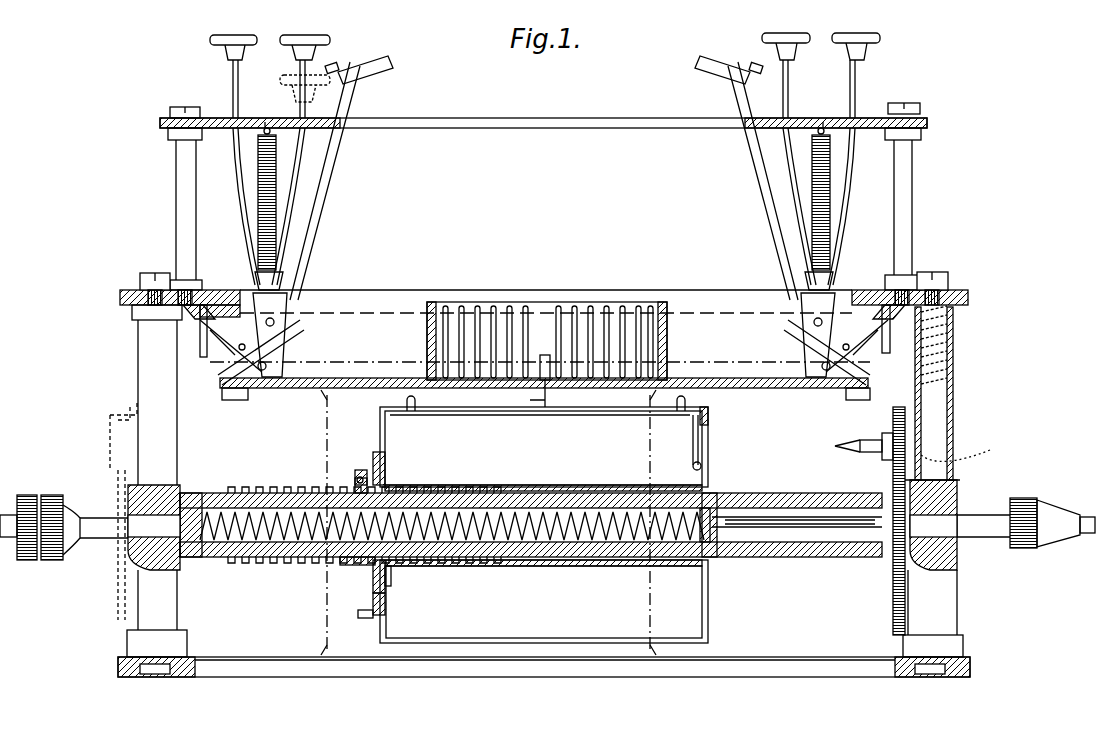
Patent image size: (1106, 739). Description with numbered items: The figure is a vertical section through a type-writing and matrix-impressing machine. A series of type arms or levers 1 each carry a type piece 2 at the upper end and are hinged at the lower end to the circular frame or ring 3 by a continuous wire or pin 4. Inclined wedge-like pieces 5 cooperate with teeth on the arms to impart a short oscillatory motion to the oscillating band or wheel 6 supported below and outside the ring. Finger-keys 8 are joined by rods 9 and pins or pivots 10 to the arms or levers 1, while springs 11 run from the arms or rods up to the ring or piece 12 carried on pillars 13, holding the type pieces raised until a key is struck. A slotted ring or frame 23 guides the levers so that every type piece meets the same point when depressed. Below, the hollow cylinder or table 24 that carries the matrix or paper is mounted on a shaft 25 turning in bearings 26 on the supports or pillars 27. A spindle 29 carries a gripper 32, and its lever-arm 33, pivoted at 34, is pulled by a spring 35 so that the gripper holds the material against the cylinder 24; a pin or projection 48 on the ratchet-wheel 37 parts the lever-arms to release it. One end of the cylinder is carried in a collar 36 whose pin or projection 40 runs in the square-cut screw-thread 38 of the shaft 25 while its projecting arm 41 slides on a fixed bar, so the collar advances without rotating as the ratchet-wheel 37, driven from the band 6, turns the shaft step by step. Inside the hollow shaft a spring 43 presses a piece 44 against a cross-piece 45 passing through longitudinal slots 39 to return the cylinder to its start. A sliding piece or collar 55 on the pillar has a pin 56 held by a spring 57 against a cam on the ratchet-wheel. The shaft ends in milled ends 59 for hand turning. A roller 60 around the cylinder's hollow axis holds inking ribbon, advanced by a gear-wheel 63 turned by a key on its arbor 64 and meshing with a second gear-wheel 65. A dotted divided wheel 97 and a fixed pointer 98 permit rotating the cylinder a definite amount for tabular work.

The type arms or levers 1 is at (326, 190).
The type piece 2 is at (393, 70).
The circular frame or ring 3 is at (120, 294).
The continuous wire or pin 4 is at (262, 338).
The inclined wedge-like pieces 5 is at (200, 350).
The oscillating band or wheel 6 is at (192, 322).
The finger-keys 8 is at (250, 35).
The rods 9 is at (233, 90).
The pins or pivots 10 is at (280, 322).
The springs 11 is at (258, 228).
The ring or piece 12 is at (380, 114).
The pillars 13 is at (178, 193).
The slotted ring or frame 23 is at (568, 305).
The hollow cylinder or table 24 is at (544, 449).
The shaft 25 is at (232, 482).
The bearings 26 is at (130, 490).
The supports or pillars 27 is at (544, 491).
The shaft or spindle 29 is at (624, 416).
The gripper 32 is at (552, 381).
The lever-arm 33 is at (693, 440).
The pivot 34 is at (715, 413).
The spring 35 is at (702, 465).
The collar 36 is at (362, 577).
The ratchet-wheel 37 is at (893, 592).
The square-cut path or screw-thread 38 is at (305, 490).
The longitudinal slots 39 is at (797, 527).
The pin or projection 40 is at (367, 468).
The projecting arm 41 is at (335, 566).
The spring 43 is at (262, 558).
The piece 44 is at (720, 540).
The cross-piece 45 is at (725, 500).
The pin or projection 48 is at (852, 448).
The sliding piece or collar 55 is at (953, 412).
The pin or projection 56 is at (955, 460).
The spring 57 is at (953, 352).
The milled ends 59 is at (547, 513).
The roller 60 is at (544, 601).
The gear-wheel 63 is at (393, 604).
The arbor 64 is at (359, 619).
The second gear-wheel 65 is at (399, 576).
The wheel 97 is at (118, 575).
The pointer 98 is at (112, 440).